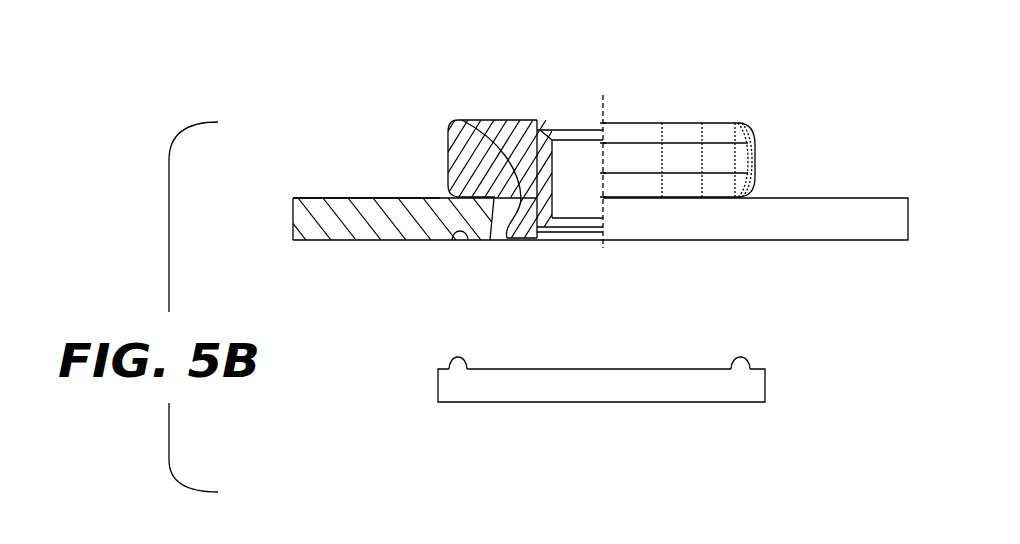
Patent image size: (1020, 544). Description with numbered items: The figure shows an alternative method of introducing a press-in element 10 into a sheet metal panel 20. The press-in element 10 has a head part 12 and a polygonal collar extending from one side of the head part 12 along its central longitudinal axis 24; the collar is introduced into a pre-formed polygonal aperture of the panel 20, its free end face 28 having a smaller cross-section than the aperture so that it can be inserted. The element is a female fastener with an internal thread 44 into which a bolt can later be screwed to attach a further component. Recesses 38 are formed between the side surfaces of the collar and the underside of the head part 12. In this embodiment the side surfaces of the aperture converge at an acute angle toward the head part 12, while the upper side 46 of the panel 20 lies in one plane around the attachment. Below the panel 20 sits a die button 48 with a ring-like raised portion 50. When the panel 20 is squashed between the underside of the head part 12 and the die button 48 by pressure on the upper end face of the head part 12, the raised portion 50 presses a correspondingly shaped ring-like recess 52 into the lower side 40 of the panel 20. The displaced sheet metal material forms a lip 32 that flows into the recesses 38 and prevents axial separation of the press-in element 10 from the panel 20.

The press-in element 10 is at (620, 187).
The head part 12 is at (448, 157).
The panel 20 is at (328, 240).
The central longitudinal axis 24 is at (603, 98).
The free end face 28 is at (573, 243).
The lip 32 is at (494, 240).
The recesses 38 is at (464, 120).
The lower side of the sheet metal part 40 is at (850, 240).
The internal thread 44 is at (553, 160).
The upper side of the sheet metal part 46 is at (340, 197).
The die button 48 is at (731, 390).
The ring-like raised portion 50 is at (458, 357).
The ring-like recess 52 is at (462, 240).